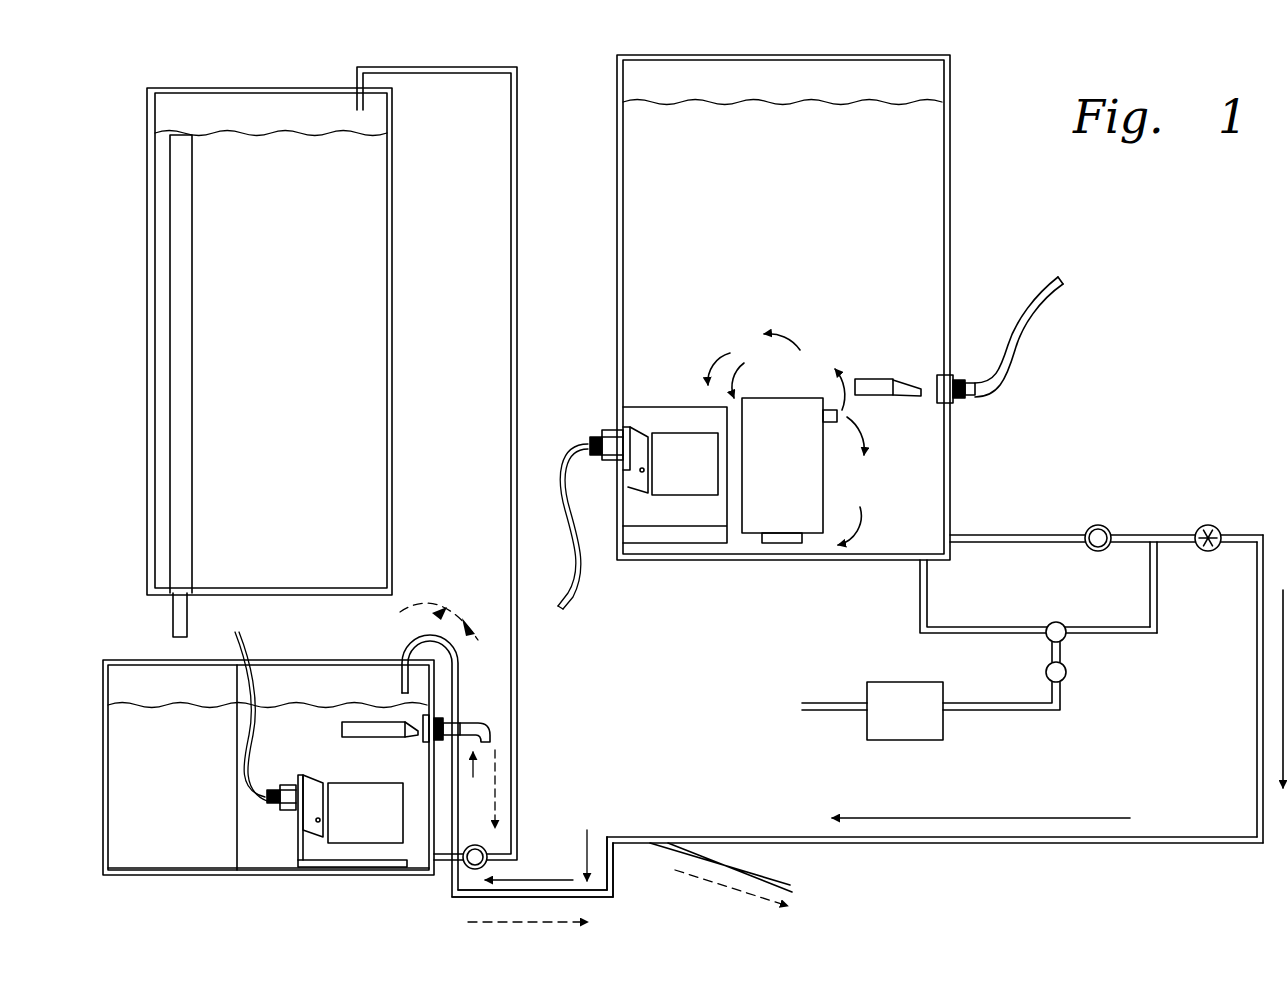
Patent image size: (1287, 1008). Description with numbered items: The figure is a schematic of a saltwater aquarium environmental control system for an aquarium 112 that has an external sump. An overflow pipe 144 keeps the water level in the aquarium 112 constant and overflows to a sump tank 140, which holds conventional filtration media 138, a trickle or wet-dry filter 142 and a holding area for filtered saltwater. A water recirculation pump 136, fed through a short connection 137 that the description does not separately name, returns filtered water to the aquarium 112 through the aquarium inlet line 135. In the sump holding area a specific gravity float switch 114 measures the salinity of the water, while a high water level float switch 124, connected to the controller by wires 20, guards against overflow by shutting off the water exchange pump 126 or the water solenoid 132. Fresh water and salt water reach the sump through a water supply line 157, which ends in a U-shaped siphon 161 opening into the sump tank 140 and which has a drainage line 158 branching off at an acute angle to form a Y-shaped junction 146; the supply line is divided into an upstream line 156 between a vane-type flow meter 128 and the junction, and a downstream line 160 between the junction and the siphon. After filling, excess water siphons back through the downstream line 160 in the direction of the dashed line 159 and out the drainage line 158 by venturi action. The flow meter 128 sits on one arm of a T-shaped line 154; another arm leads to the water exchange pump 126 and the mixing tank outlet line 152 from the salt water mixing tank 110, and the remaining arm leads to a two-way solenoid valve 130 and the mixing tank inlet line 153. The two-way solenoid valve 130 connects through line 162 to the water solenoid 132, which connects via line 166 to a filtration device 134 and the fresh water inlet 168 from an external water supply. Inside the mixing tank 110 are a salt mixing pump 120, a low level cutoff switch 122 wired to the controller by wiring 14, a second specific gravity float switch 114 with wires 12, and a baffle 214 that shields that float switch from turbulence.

The wires 12 is at (568, 609).
The wiring 14 is at (1058, 275).
The wires 20 is at (477, 720).
The salt water mixing tank 110 is at (976, 217).
The aquarium 112 is at (135, 160).
The specific gravity float switch 114 is at (392, 825).
The salt mixing pump 120 is at (805, 485).
The low level cutoff switch 122 is at (872, 378).
The high water level float switch 124 is at (345, 710).
The water exchange pump 126 is at (1108, 524).
The vane-type flow meter 128 is at (1212, 524).
The 2-way solenoid valve 130 is at (1058, 622).
The water solenoid 132 is at (1067, 672).
The filtration device 134 is at (922, 727).
The aquarium inlet line 135 is at (513, 418).
The water recirculation pump 136 is at (487, 850).
The outlet pipe 137 is at (440, 862).
The filtration media 138 is at (194, 795).
The sump tank 140 is at (130, 645).
The trickle or wet-dry filter 142 is at (235, 827).
The overflow pipe 144 is at (178, 325).
The Y-shaped junction 146 is at (670, 836).
The mixing tank outlet line 152 is at (978, 533).
The mixing tank inlet line 153 is at (920, 598).
The T-shaped line 154 is at (1150, 533).
The upstream line 156 is at (1125, 837).
The water supply line 157 is at (1257, 655).
The drainage line 158 is at (783, 882).
The dashed line 159 is at (737, 895).
The downstream line 160 is at (1257, 765).
The U-shaped siphon 161 is at (415, 638).
The line 162 is at (1052, 650).
The line 166 is at (1003, 713).
The fresh water inlet 168 is at (815, 706).
The baffle 214 is at (668, 408).